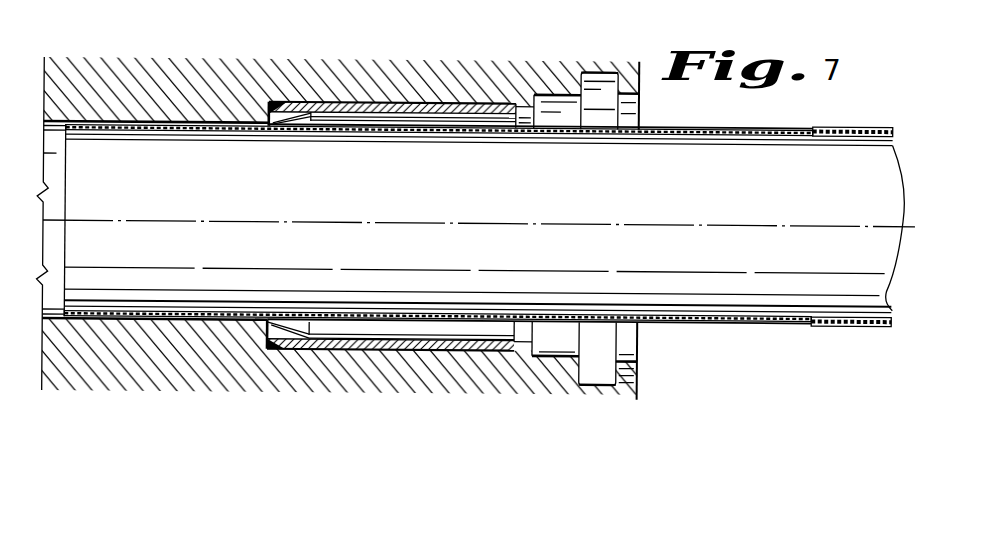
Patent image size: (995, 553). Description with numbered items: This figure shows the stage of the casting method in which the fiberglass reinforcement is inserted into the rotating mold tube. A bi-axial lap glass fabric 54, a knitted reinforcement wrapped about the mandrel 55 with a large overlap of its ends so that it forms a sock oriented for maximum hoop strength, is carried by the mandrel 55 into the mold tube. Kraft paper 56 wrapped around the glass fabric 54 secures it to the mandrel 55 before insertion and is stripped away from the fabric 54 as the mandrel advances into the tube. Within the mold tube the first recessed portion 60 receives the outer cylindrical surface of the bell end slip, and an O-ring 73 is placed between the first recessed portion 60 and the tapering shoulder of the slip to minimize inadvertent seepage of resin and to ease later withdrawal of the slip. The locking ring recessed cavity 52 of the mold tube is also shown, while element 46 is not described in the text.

The sleeve 46 is at (427, 101).
The O-ring 73 is at (269, 101).
The first recessed portion 60 is at (364, 349).
The locking ring recessed cavity 52 is at (600, 384).
The bi-axial lap glass fabric 54 is at (659, 137).
The mandrel 55 is at (730, 138).
The kraft paper 56 is at (866, 127).